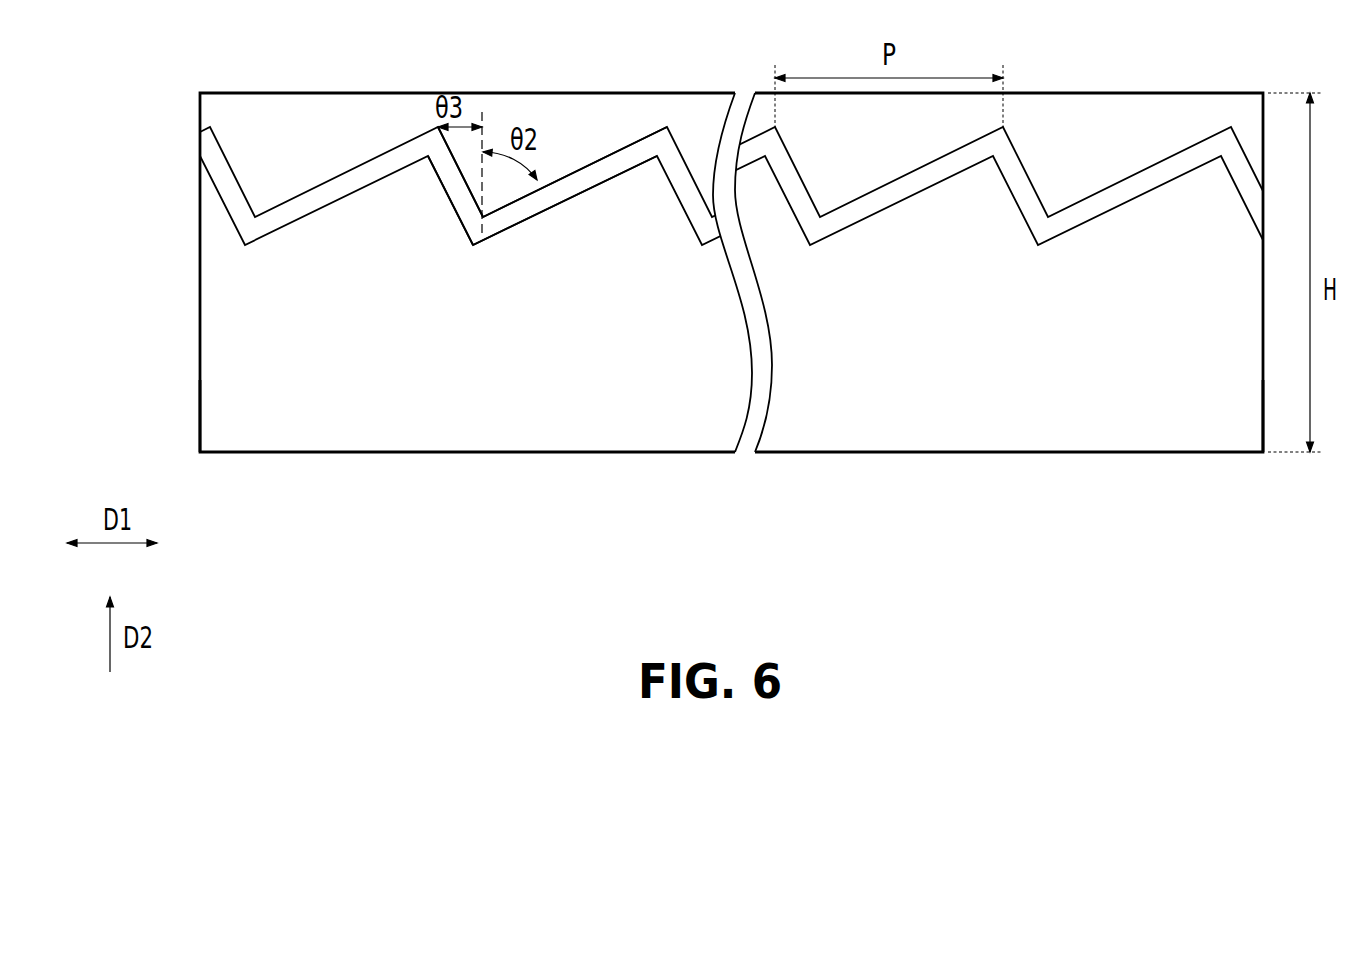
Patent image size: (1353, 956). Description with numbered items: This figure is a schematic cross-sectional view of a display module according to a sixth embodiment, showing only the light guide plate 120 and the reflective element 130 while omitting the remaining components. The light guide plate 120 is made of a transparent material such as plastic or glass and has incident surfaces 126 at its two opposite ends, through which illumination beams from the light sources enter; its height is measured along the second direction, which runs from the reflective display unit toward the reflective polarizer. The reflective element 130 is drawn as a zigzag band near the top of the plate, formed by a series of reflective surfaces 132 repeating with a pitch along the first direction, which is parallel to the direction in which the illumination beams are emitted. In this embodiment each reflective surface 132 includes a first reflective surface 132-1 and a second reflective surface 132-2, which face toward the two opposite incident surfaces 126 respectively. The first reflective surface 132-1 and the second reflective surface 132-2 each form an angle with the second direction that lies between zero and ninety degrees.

The light guide plate 120 is at (218, 332).
The incident surfaces 126 is at (203, 414).
The reflective element 130 is at (731, 366).
The reflective surfaces 132 is at (731, 330).
The first reflective surface 132-1 is at (563, 198).
The second reflective surface 132-2 is at (450, 198).